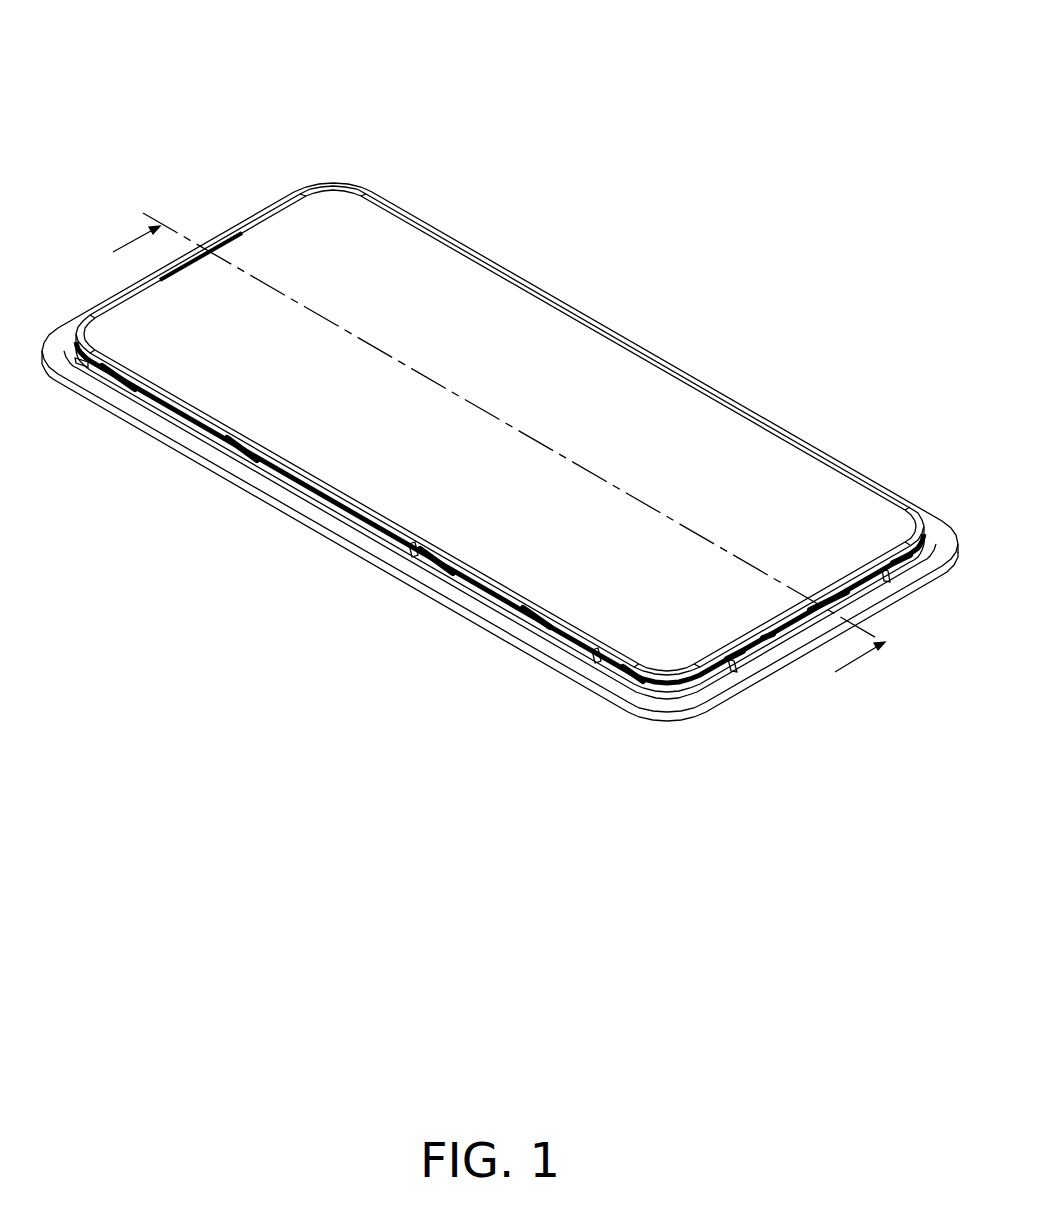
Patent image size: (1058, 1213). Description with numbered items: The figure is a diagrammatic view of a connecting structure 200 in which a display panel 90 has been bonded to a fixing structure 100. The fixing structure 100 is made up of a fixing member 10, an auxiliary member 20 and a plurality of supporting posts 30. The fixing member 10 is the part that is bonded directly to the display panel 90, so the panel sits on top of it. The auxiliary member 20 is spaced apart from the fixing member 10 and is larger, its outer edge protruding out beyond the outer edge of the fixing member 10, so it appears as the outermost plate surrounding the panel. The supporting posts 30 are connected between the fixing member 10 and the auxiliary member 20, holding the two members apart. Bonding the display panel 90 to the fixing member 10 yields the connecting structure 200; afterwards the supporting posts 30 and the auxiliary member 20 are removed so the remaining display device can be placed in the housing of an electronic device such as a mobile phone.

The connecting structure 200 is at (528, 37).
The fixing structure 100 is at (386, 643).
The fixing member 10 is at (315, 483).
The auxiliary member 20 is at (267, 485).
The supporting posts 30 is at (413, 550).
The display panel 90 is at (243, 395).